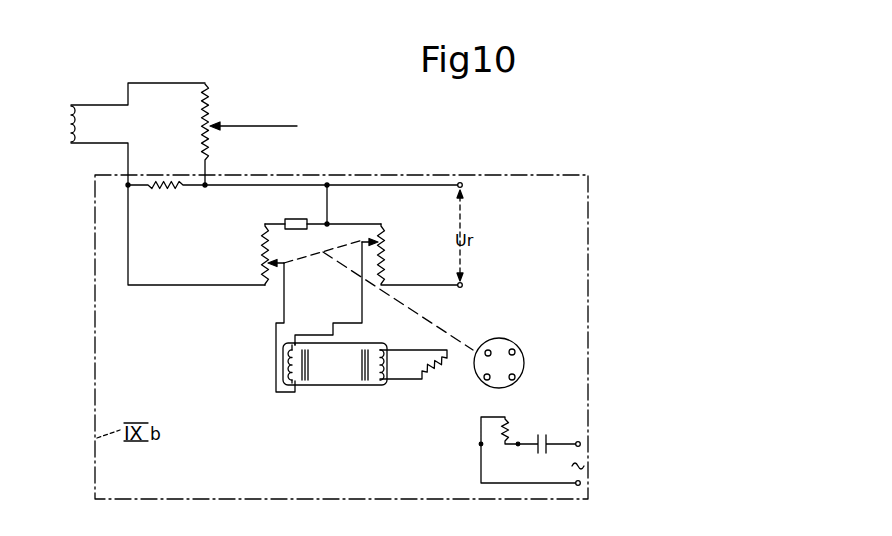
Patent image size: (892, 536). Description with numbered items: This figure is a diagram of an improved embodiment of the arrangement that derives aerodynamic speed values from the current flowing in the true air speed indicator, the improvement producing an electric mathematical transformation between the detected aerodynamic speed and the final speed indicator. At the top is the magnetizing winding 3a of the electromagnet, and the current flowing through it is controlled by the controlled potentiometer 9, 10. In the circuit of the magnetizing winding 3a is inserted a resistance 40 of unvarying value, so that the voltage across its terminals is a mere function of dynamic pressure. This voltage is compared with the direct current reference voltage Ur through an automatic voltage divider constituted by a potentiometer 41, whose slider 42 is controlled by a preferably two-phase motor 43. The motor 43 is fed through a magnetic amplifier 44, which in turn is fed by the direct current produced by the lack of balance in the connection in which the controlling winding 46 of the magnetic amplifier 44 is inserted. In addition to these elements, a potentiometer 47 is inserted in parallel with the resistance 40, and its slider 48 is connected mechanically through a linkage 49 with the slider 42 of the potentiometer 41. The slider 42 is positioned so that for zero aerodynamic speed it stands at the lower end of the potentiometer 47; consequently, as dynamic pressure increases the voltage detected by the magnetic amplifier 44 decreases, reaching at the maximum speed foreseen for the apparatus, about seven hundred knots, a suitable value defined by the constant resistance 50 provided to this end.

The magnetizing winding 3a is at (68, 123).
The controlled potentiometer 10 is at (213, 102).
The controlled potentiometer 9 is at (264, 126).
The resistance 40 is at (165, 182).
The constant resistance 50 is at (290, 219).
The potentiometer 47 is at (262, 245).
The potentiometer 41 is at (390, 262).
The slider 42 is at (367, 238).
The slider 48 is at (277, 270).
The linkage 49 is at (292, 265).
The magnetic amplifier 44 is at (318, 379).
The winding 46 is at (313, 334).
The two-phase motor 43 is at (518, 365).